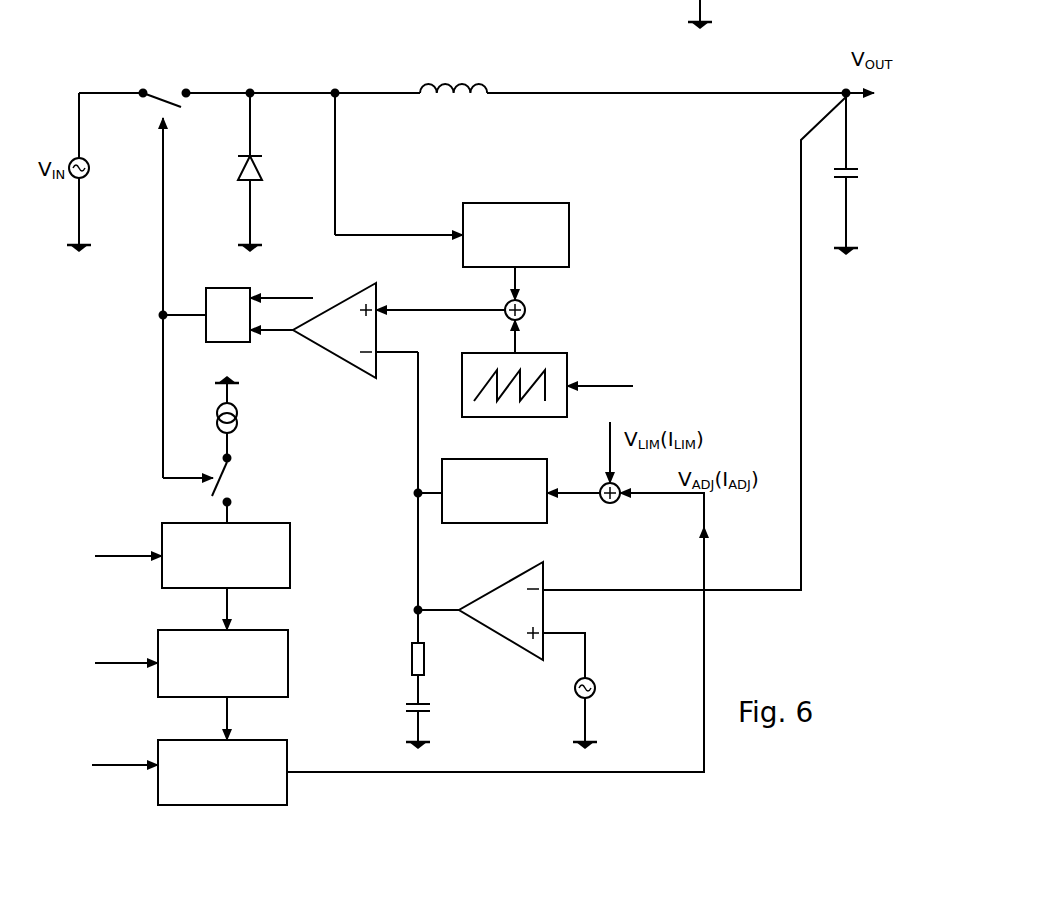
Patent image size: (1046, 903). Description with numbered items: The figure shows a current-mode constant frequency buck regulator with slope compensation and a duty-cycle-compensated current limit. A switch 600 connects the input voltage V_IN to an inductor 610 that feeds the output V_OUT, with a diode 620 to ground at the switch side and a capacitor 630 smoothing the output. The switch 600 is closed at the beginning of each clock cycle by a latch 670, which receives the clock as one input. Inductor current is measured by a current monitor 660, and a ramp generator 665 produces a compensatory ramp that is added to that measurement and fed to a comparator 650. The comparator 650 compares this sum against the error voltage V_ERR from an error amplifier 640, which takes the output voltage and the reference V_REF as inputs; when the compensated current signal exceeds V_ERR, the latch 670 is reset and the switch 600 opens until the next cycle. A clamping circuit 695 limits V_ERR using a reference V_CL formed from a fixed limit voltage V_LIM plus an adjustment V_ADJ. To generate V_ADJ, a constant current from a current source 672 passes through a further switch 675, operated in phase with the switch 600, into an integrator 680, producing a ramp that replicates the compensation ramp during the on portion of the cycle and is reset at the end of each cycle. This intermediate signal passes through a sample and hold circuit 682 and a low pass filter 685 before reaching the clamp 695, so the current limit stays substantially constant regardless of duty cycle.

The switch 600 is at (173, 82).
The inductor 610 is at (455, 80).
The diode 620 is at (268, 173).
The capacitor 630 is at (842, 181).
The error amplifier 640 is at (510, 617).
The comparator 650 is at (337, 332).
The current monitor 660 is at (557, 212).
The ramp generator 665 is at (545, 373).
The latch 670 is at (222, 312).
The current source 672 is at (238, 438).
The further switch 675 is at (205, 463).
The integrator 680 is at (272, 543).
The sample and hold circuit 682 is at (272, 670).
The low pass filter 685 is at (183, 788).
The clamping circuit 695 is at (503, 523).